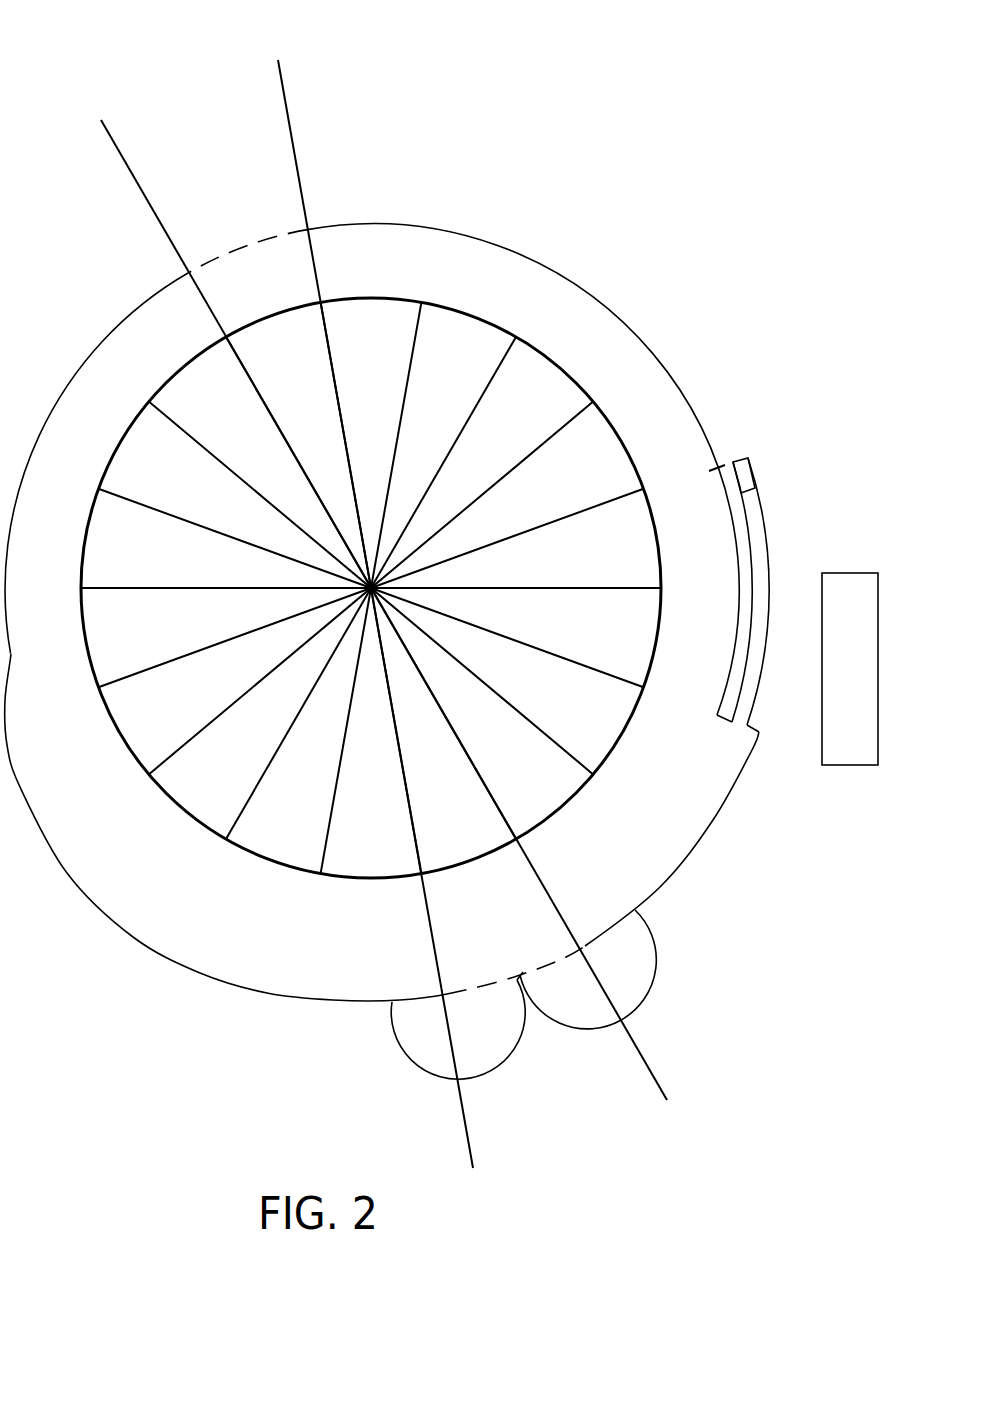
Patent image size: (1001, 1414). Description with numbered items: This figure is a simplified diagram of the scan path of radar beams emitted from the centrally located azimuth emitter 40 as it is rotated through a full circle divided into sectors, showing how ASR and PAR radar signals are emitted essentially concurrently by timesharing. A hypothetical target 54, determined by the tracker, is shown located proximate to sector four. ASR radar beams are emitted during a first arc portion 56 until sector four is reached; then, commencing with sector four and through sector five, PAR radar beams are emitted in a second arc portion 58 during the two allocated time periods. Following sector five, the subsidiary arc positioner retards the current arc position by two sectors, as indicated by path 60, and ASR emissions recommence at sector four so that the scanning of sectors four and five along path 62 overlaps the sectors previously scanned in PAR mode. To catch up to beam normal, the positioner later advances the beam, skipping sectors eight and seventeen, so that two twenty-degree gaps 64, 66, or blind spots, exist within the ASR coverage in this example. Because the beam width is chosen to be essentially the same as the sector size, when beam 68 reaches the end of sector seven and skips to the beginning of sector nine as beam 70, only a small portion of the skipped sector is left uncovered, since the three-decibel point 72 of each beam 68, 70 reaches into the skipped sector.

The azimuth emitter 40 is at (412, 485).
The target 54 is at (848, 766).
The first arc portion 56 is at (568, 278).
The second arc portion 58 is at (722, 675).
The path 60 is at (760, 482).
The path 62 is at (765, 522).
The gap 64 is at (557, 1118).
The gap 66 is at (207, 108).
The beam 68 is at (652, 990).
The beam 70 is at (440, 1084).
The 3 dB point 72 is at (522, 982).